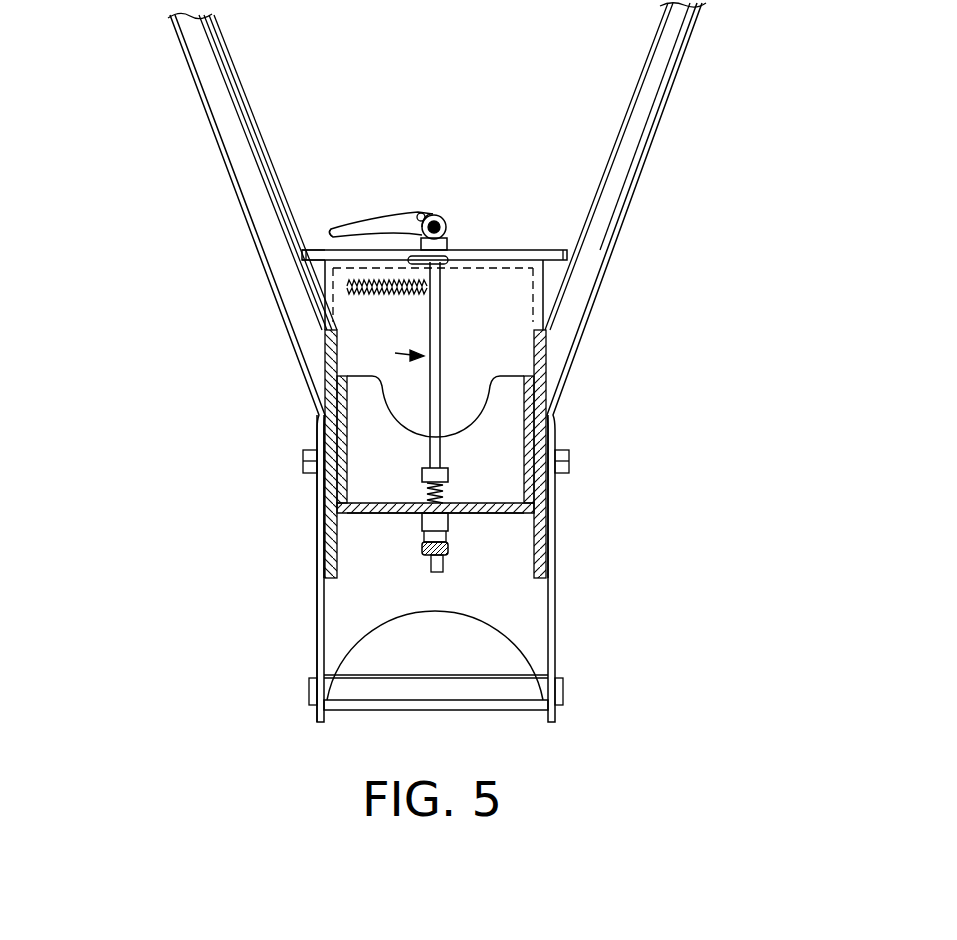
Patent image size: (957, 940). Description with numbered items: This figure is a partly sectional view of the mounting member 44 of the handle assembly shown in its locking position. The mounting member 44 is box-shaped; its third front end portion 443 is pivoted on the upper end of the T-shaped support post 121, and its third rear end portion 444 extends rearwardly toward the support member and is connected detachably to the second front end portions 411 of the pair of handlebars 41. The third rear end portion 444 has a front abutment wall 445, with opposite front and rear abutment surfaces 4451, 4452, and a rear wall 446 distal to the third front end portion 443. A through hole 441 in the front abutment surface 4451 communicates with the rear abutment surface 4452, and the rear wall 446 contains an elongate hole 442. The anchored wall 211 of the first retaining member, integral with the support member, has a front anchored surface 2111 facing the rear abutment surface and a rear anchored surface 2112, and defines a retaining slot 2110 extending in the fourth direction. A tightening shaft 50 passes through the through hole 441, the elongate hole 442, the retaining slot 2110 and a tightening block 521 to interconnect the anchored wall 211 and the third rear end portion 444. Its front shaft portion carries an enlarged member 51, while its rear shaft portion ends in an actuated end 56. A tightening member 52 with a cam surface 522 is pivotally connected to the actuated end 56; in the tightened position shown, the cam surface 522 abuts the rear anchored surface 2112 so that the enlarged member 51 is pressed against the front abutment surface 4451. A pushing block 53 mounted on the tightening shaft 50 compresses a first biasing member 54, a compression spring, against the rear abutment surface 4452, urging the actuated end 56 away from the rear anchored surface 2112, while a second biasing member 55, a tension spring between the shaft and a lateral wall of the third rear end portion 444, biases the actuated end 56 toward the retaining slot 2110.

The handlebars 41 is at (200, 83).
The second front end portions 411 is at (290, 317).
The mounting member 44 is at (330, 403).
The through hole 441 is at (421, 520).
The elongate hole 442 is at (374, 250).
The third front end portion 443 is at (553, 650).
The third rear end portion 444 is at (553, 412).
The front abutment wall 445 is at (345, 505).
The front abutment surface 4451 is at (505, 512).
The rear abutment surface 4452 is at (485, 504).
The rear wall 446 is at (530, 282).
The tightening shaft 50 is at (395, 353).
The enlarged member 51 is at (448, 532).
The tightening member 52 is at (437, 215).
The tightening block 521 is at (448, 240).
The cam surface 522 is at (447, 216).
The pushing block 53 is at (450, 472).
The first biasing member 54 is at (424, 480).
The second biasing member 55 is at (345, 285).
The actuated end 56 is at (455, 252).
The support post 121 is at (505, 703).
The anchored wall 211 is at (318, 250).
The retaining slot 2110 is at (406, 250).
The front anchored surface 2111 is at (415, 262).
The rear anchored surface 2112 is at (318, 250).